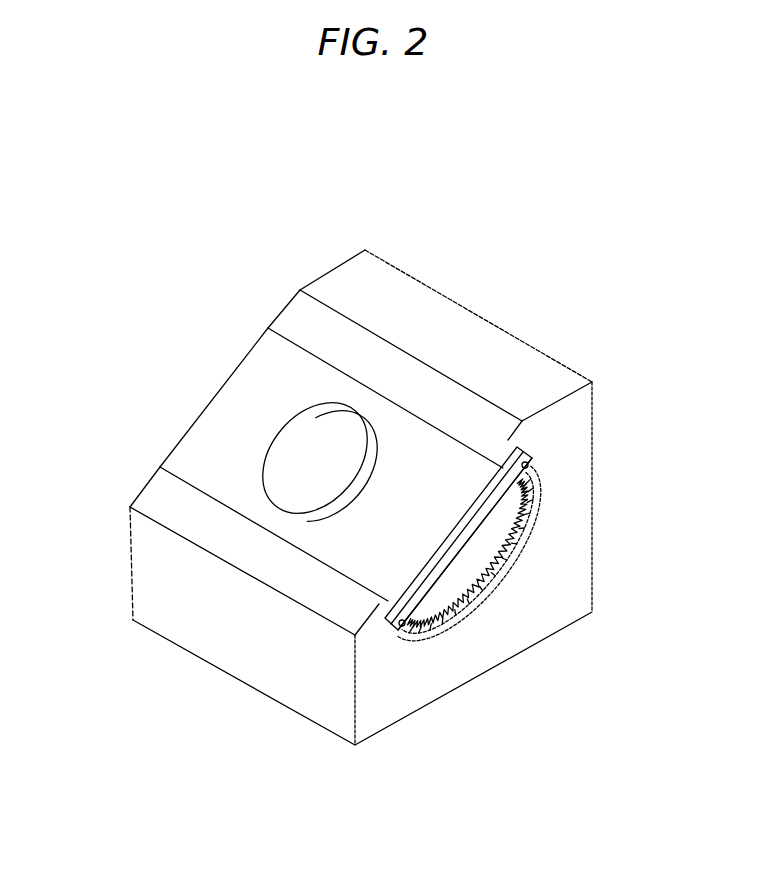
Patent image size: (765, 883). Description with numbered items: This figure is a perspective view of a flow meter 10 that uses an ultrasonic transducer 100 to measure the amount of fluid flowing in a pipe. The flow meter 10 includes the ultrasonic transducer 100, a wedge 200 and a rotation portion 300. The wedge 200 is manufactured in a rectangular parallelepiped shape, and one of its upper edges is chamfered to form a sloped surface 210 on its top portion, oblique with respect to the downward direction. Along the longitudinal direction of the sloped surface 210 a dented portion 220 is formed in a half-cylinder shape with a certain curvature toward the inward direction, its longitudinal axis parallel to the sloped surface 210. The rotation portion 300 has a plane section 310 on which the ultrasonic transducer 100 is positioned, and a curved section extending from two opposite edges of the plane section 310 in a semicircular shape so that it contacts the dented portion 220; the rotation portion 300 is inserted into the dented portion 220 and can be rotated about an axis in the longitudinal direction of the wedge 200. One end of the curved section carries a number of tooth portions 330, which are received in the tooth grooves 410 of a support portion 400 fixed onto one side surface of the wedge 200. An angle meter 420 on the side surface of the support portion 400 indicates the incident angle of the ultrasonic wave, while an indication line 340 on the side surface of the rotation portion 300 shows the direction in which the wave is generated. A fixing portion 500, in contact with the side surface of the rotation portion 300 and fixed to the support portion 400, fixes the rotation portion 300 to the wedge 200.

The flow meter 10 is at (556, 256).
The ultrasonic transducer 100 is at (359, 401).
The wedge 200 is at (333, 491).
The sloped surface 210 is at (151, 493).
The dented portion 220 is at (288, 338).
The rotation portion 300 is at (312, 453).
The plane section 310 is at (193, 447).
The tooth portions 330 is at (520, 536).
The indication line 340 is at (467, 547).
The support portion 400 is at (530, 590).
The tooth grooves 410 is at (437, 631).
The angle meter 420 is at (497, 590).
The fixing portion 500 is at (521, 529).